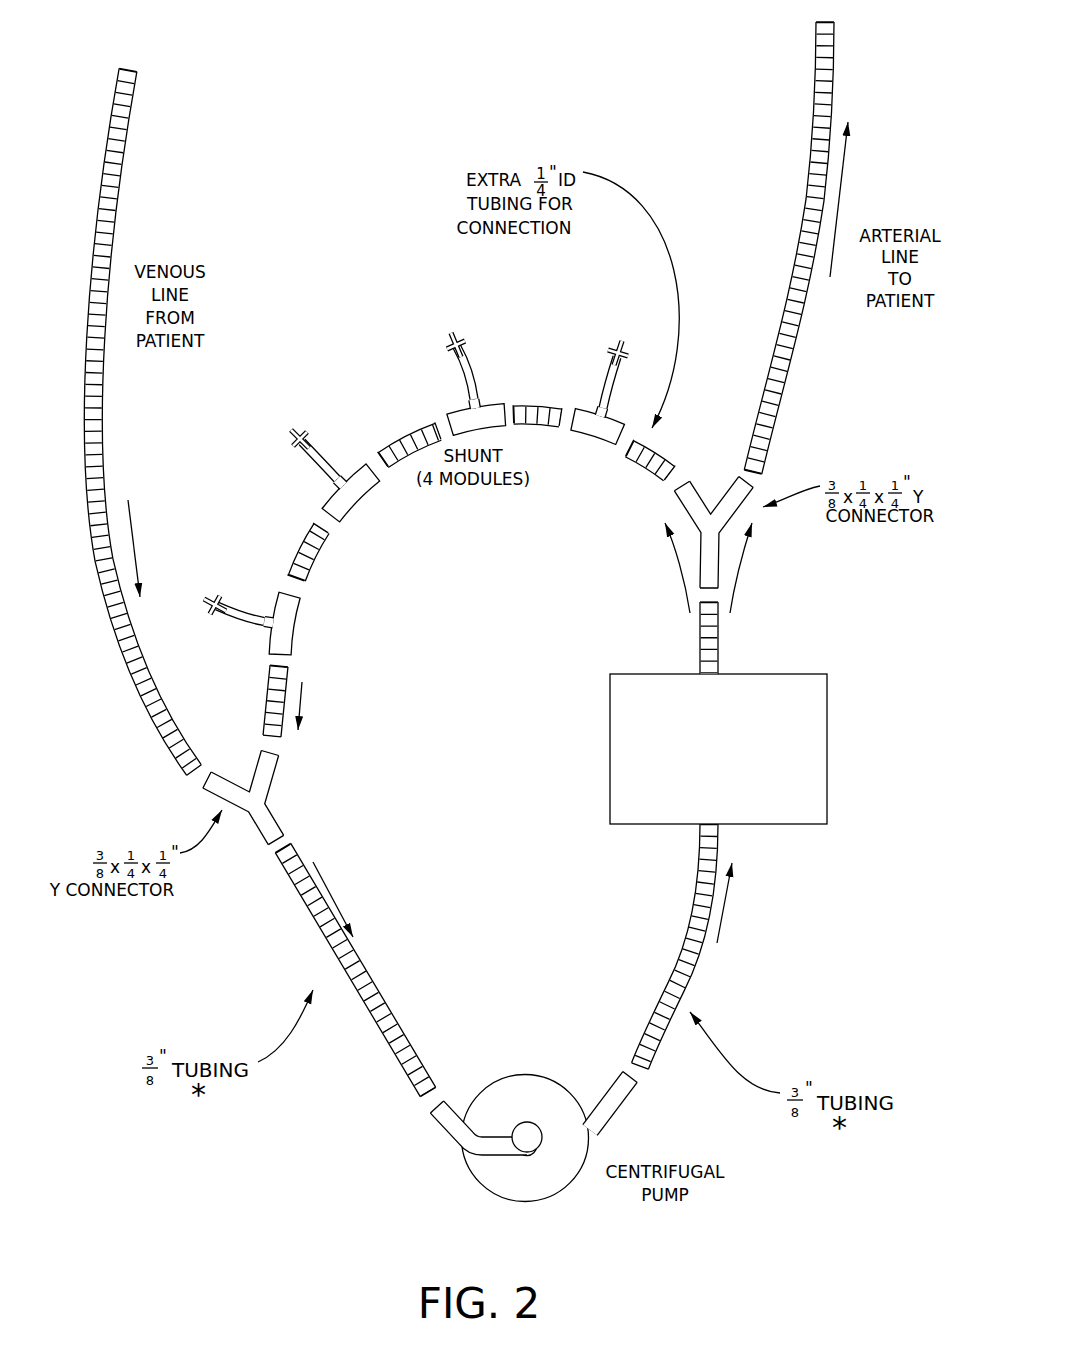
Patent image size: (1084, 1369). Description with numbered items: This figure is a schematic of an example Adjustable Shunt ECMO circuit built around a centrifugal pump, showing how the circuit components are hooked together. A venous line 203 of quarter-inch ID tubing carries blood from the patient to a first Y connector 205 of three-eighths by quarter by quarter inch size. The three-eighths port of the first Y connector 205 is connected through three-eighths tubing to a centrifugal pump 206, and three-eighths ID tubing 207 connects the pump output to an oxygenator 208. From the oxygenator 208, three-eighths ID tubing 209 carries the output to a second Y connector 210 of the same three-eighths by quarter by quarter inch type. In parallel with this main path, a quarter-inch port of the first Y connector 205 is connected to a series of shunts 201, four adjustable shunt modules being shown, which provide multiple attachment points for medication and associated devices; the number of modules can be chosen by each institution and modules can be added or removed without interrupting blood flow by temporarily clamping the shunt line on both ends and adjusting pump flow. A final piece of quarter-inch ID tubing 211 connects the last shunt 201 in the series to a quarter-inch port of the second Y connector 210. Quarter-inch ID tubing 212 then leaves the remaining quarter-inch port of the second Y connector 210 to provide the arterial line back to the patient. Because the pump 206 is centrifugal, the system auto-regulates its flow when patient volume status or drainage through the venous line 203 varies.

The shunt 201 is at (578, 458).
The venous line 203 is at (150, 200).
The first Y connector 205 is at (237, 824).
The centrifugal pump 206 is at (514, 1172).
The three-eighths inch ID tubing 207 is at (715, 953).
The oxygenator 208 is at (698, 782).
The three-eighths inch ID tubing 209 is at (757, 627).
The second Y connector 210 is at (786, 470).
The quarter inch ID tubing 211 is at (670, 435).
The quarter inch ID tubing 212 is at (862, 172).